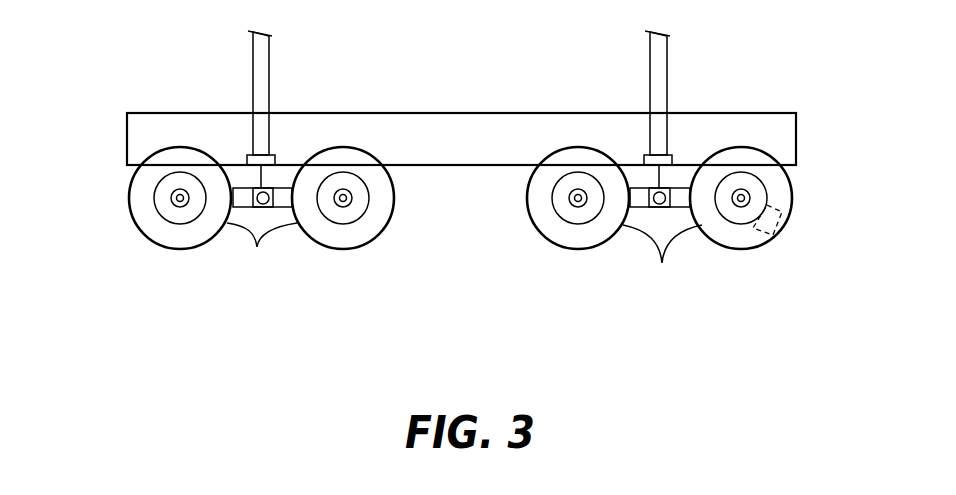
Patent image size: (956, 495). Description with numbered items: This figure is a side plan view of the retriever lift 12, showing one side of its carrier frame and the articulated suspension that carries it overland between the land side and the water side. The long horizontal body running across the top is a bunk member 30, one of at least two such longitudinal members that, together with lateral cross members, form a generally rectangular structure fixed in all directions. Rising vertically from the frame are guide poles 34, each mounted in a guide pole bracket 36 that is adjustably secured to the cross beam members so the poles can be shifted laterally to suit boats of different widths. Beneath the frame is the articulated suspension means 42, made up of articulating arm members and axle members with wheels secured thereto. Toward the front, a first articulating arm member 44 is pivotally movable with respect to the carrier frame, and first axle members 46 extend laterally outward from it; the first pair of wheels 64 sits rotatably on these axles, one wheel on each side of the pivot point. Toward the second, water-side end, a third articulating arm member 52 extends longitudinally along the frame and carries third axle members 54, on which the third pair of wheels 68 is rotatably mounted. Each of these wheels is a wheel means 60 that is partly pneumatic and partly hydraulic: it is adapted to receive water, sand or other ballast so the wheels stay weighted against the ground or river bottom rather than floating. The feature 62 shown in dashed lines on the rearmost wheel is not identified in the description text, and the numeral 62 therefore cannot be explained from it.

The retriever lift 12 is at (785, 55).
The bunk member 30 is at (460, 113).
The guide pole 34 is at (269, 60).
The guide pole bracket 36 is at (253, 188).
The articulated suspension means 42 is at (527, 202).
The first articulating arm member 44 is at (285, 188).
The first axle member 46 is at (215, 240).
The third articulating arm member 52 is at (677, 188).
The third axle member 54 is at (578, 198).
The wheel means 60 is at (150, 235).
The drive motor (hidden) 62 is at (775, 236).
The first pair of wheels 64 is at (215, 202).
The third pair of wheels 68 is at (695, 195).